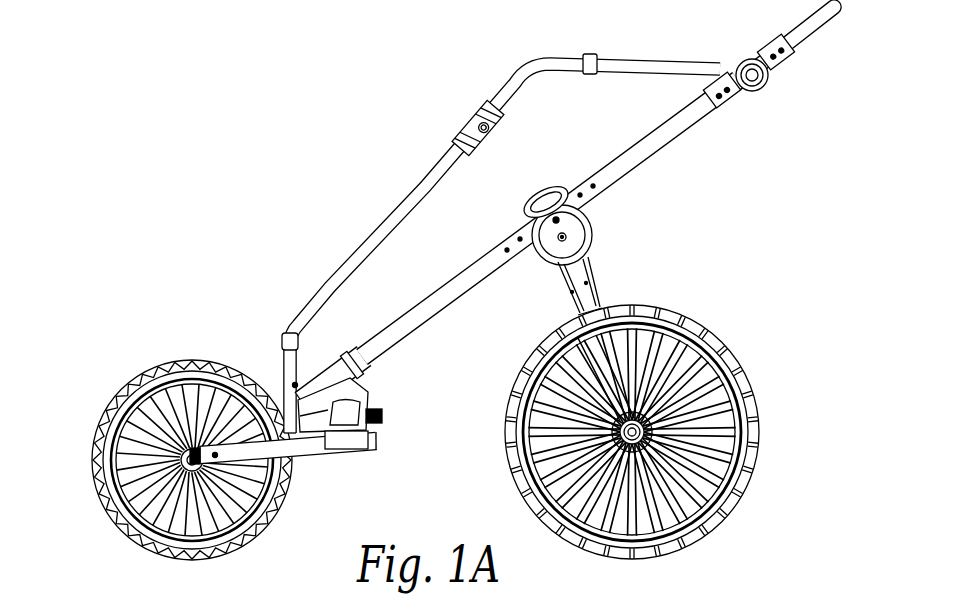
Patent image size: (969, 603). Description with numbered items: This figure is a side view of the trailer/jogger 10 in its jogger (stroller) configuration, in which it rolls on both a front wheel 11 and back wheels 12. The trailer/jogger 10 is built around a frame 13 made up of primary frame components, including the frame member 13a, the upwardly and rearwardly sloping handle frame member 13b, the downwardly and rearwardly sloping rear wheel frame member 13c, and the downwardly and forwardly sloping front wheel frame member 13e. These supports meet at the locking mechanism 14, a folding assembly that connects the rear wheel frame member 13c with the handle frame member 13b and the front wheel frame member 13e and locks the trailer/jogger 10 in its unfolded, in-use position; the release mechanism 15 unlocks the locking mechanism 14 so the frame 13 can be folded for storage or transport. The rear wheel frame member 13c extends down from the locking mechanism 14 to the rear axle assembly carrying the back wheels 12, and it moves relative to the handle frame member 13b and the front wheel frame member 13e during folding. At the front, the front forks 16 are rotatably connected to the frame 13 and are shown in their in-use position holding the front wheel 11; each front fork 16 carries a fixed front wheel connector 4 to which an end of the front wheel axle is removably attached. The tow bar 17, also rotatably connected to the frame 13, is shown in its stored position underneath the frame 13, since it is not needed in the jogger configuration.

The trailer/jogger 10 is at (252, 158).
The front wheel 11 is at (104, 432).
The front wheel connector 4 is at (168, 465).
The back wheel 12 is at (740, 472).
The frame 13 is at (492, 85).
The frame member 13a is at (422, 188).
The handle frame member 13b is at (652, 142).
The rear wheel frame member 13c is at (609, 368).
The front wheel frame member 13e is at (435, 296).
The locking mechanism 14 is at (580, 238).
The release mechanism 15 is at (545, 190).
The front fork 16 is at (298, 455).
The tow bar 17 is at (380, 400).